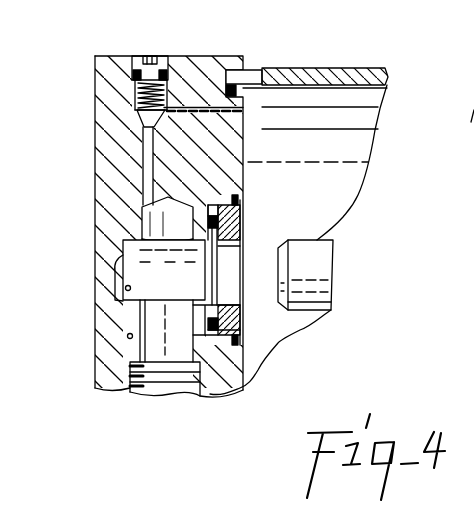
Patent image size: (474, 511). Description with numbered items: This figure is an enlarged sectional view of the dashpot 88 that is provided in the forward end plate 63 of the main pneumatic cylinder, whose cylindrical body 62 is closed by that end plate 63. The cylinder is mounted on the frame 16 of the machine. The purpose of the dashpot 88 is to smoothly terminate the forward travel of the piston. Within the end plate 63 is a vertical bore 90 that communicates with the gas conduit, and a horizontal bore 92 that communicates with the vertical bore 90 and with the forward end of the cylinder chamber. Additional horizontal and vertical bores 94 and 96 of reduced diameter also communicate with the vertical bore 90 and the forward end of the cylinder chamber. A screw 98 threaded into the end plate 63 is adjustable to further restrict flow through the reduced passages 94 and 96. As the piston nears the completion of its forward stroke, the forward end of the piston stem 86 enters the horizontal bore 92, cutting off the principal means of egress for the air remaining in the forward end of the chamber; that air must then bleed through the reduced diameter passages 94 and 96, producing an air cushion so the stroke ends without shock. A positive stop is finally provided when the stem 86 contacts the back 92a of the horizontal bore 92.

The frame body 16 is at (473, 237).
The cylindrical body 62 is at (337, 72).
The forward end plate 63 is at (92, 128).
The piston stem 86 is at (347, 218).
The dashpot 88 is at (66, 161).
The vertical bore 90 is at (127, 335).
The horizontal bore 92 is at (241, 252).
The back of horizontal bore 92a is at (126, 288).
The horizontal bore of reduced diameter 94 is at (230, 72).
The vertical bore of reduced diameter 96 is at (141, 181).
The screw 98 is at (165, 60).